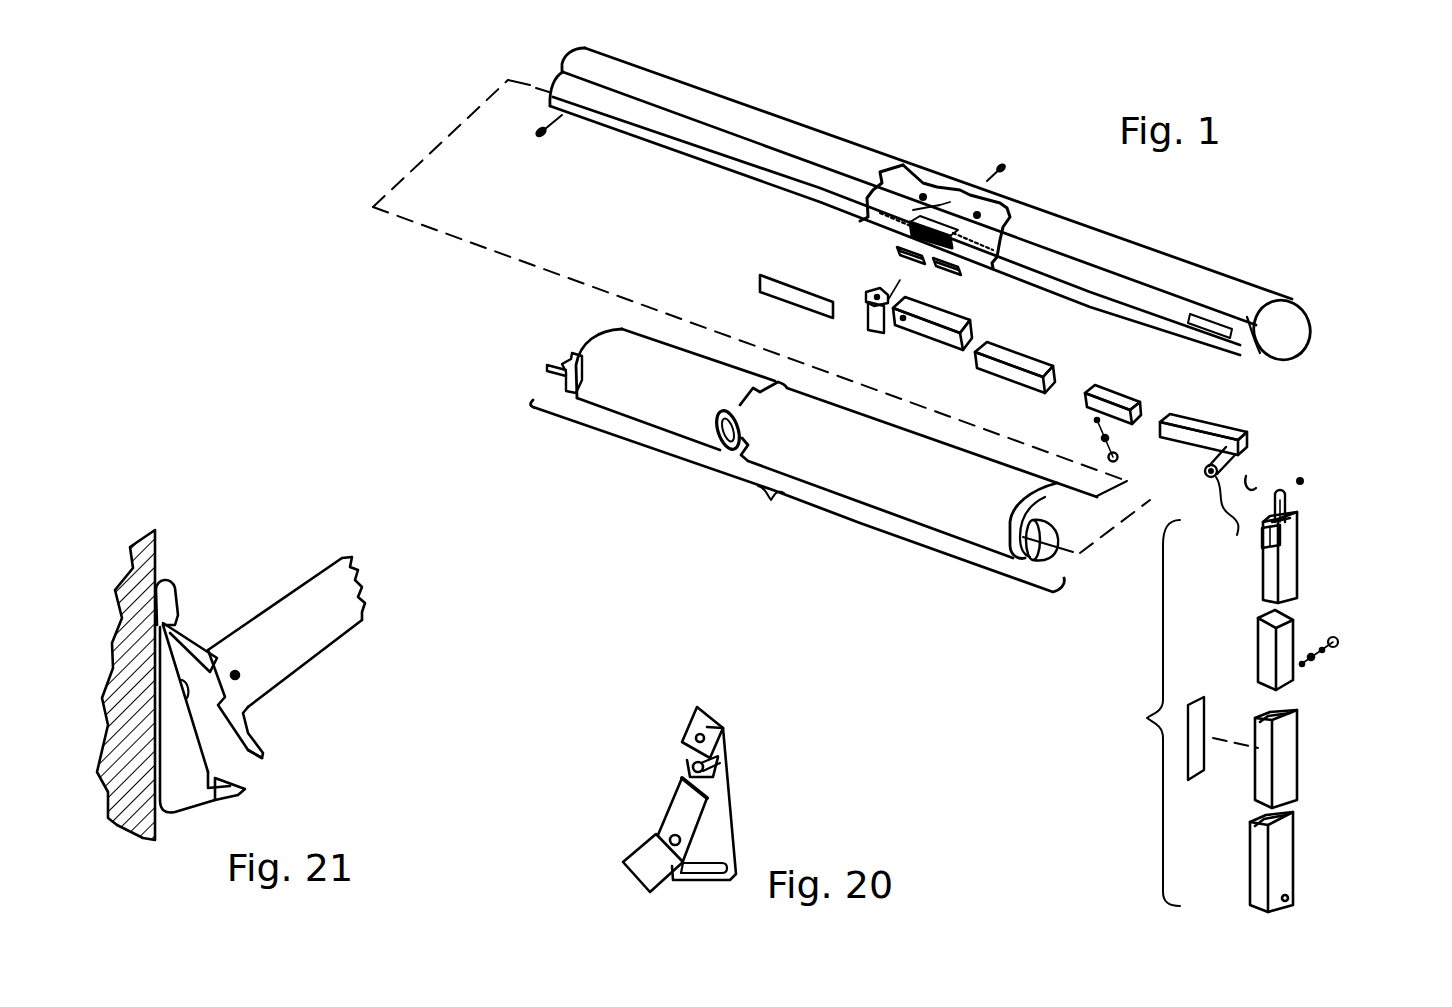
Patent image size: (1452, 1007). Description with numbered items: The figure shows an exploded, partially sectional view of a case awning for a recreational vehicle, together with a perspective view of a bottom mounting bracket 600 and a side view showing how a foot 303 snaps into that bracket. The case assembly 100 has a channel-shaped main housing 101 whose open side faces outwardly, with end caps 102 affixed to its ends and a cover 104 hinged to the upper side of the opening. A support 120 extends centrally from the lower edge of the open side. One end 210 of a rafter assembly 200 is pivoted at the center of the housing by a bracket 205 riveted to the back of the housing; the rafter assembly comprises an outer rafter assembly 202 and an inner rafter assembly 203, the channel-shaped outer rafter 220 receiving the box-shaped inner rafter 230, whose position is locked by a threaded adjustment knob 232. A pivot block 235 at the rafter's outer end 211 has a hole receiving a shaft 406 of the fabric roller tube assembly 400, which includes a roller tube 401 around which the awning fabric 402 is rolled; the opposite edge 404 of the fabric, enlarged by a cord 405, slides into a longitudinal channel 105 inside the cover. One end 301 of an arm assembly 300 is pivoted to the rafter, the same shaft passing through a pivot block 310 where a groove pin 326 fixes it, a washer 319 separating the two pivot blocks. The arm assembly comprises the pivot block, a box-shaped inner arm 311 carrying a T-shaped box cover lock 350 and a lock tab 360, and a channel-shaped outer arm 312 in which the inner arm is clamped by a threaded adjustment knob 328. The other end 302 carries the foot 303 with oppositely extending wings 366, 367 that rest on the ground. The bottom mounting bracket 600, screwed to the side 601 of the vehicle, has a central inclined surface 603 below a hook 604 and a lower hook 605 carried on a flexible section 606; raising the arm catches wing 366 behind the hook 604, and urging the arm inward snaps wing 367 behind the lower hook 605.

In FIG. 1, the case assembly 100 is at (838, 125).
In FIG. 1, the main housing 101 is at (1122, 248).
In FIG. 1, the end caps 102 is at (1298, 338).
In FIG. 1, the cover 104 is at (715, 145).
In FIG. 1, the longitudinal channel 105 is at (567, 62).
In FIG. 1, the support 120 is at (910, 223).
In FIG. 1, the rafter assembly 200 is at (1065, 364).
In FIG. 1, the outer rafter assembly 202 is at (1000, 373).
In FIG. 1, the inner rafter assembly 203 is at (1130, 388).
In FIG. 1, the bracket 205 is at (868, 298).
In FIG. 1, the end of rafter assembly 210 is at (866, 318).
In FIG. 1, the other end of rafter assembly 211 is at (1240, 448).
In FIG. 1, the outer rafter 220 is at (910, 345).
In FIG. 1, the inner rafter 230 is at (1220, 418).
In FIG. 1, the threaded adjustment knob 232 is at (1103, 452).
In FIG. 1, the pivot block 235 is at (1213, 512).
In FIG. 1, the arm assembly 300 is at (1147, 718).
In FIG. 1, the end of arm assembly 301 is at (1268, 595).
In FIG. 1, the other end of arm assembly 302 is at (1290, 893).
In FIG. 21, the foot 303 is at (242, 727).
In FIG. 1, the pivot block 310 is at (1278, 495).
In FIG. 1, the inner arm 311 is at (1265, 643).
In FIG. 21, the outer arm 312 is at (327, 636).
In FIG. 1, the washer 319 is at (1255, 480).
In FIG. 1, the groove pin 326 is at (1303, 482).
In FIG. 1, the threaded adjustment knob 328 is at (1336, 639).
In FIG. 1, the box cover lock 350 is at (1290, 540).
In FIG. 1, the lock tab 360 is at (1292, 521).
In FIG. 21, the wing 366 is at (195, 637).
In FIG. 21, the wing 367 is at (263, 748).
In FIG. 1, the fabric roller tube assembly 400 is at (798, 496).
In FIG. 1, the roller tube 401 is at (1040, 518).
In FIG. 1, the awning fabric 402 is at (672, 345).
In FIG. 1, the opposite edge of fabric 404 is at (932, 443).
In FIG. 1, the cord 405 is at (612, 332).
In FIG. 1, the shaft 406 is at (1060, 547).
In FIG. 21, the bottom mounting bracket 600 is at (167, 738).
In FIG. 20, the bottom mounting bracket 600 is at (722, 821).
In FIG. 21, the side of the vehicle 601 is at (152, 824).
In FIG. 21, the central inclined surface 603 is at (190, 690).
In FIG. 20, the central inclined surface 603 is at (680, 803).
In FIG. 21, the hook 604 is at (178, 600).
In FIG. 20, the hook 604 is at (688, 732).
In FIG. 21, the lower hook 605 is at (246, 788).
In FIG. 20, the lower hook 605 is at (645, 867).
In FIG. 20, the flexible section 606 is at (692, 880).